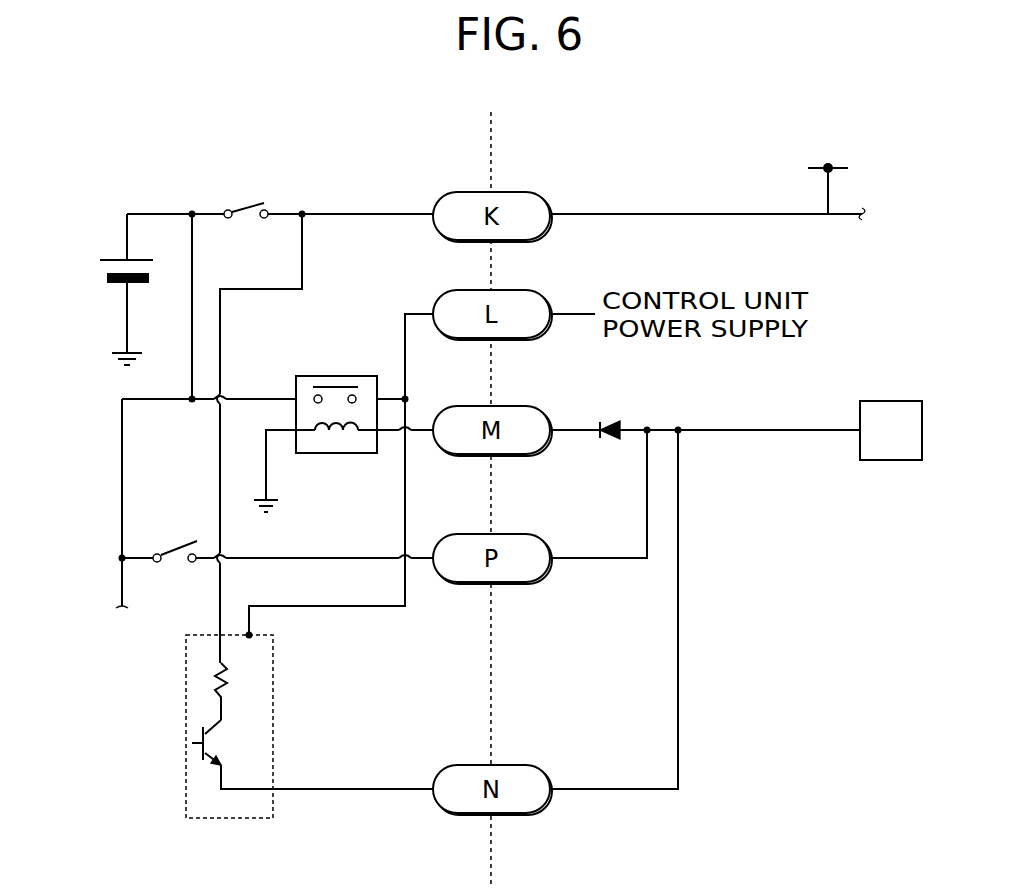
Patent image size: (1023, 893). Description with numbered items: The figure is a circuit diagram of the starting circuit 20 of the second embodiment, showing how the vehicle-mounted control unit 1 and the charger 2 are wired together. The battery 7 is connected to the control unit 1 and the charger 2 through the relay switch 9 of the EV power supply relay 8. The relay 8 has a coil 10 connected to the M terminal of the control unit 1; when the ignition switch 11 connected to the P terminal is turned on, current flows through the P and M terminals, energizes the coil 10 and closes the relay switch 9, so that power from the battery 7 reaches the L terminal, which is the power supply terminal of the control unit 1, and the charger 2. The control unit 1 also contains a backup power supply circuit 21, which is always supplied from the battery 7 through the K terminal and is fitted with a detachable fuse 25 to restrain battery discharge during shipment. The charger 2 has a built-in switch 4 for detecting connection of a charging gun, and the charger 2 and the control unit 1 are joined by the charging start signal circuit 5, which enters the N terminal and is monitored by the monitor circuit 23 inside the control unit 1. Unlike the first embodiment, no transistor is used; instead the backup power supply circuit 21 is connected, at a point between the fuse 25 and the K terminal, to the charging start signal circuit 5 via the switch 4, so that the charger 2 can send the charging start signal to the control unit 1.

The control unit 1 is at (491, 119).
The charger 2 is at (186, 652).
The switch 4 is at (200, 740).
The charging start signal circuit 5 is at (360, 790).
The battery 7 is at (100, 268).
The EV power supply relay 8 is at (314, 385).
The relay switch 9 is at (335, 392).
The coil 10 is at (332, 435).
The ignition switch 11 is at (177, 547).
The starting circuit 20 is at (732, 520).
The backup power supply circuit 21 is at (762, 212).
The monitor circuit 23 is at (922, 420).
The fuse 25 is at (244, 206).